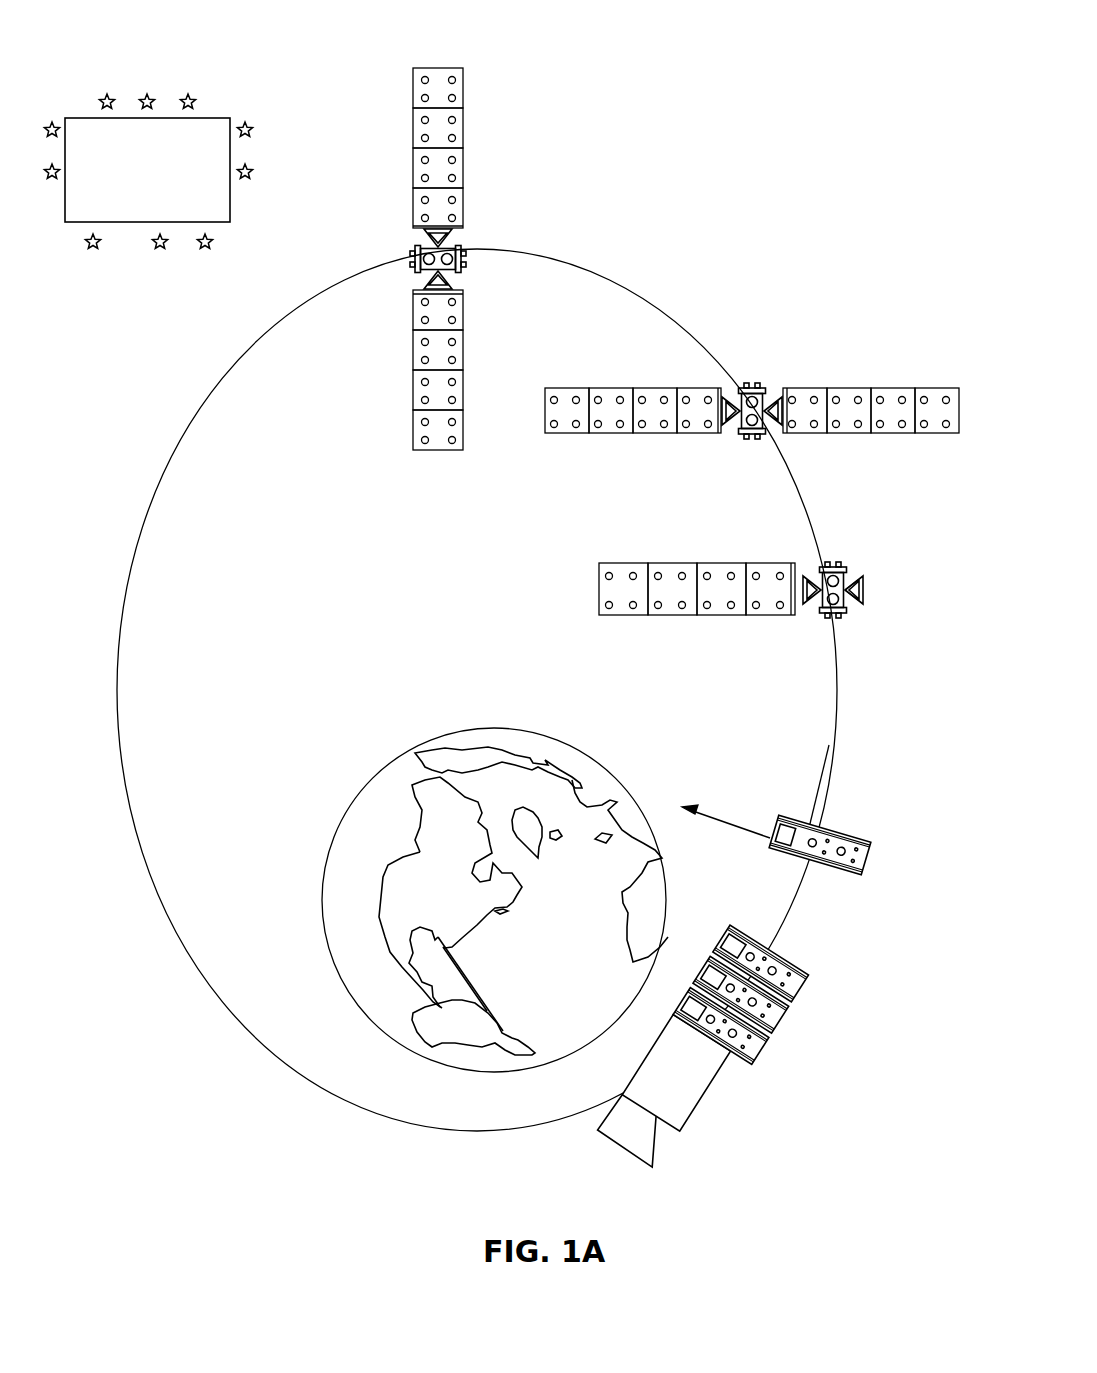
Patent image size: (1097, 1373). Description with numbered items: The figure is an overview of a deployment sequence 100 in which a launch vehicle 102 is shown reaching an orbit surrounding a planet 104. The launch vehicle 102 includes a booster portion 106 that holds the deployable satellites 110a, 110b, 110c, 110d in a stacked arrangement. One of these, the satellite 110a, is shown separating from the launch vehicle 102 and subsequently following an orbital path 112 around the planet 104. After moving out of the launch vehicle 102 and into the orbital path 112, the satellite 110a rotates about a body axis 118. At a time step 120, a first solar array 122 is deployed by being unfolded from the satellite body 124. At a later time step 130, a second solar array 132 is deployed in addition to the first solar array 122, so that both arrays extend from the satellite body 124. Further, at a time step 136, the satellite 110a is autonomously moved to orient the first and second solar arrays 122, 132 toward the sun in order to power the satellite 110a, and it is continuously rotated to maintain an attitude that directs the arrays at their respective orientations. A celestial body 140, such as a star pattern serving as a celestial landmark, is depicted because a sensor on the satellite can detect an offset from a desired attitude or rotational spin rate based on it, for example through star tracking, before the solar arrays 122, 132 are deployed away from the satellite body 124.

The deployment sequence 100 is at (722, 88).
The launch vehicle 102 is at (753, 1063).
The planet 104 is at (495, 770).
The booster portion 106 is at (687, 1106).
The satellite 110a is at (410, 254).
The satellite 110b is at (812, 973).
The satellite 110c is at (790, 1006).
The satellite 110d is at (752, 1065).
The orbital path 112 is at (836, 680).
The axis 118 is at (736, 824).
The time step 120 is at (597, 554).
The first solar array 122 is at (433, 310).
The satellite body 124 is at (850, 600).
The time step 130 is at (708, 380).
The second solar array 132 is at (440, 105).
The time step 136 is at (358, 99).
The celestial body 140 is at (88, 120).